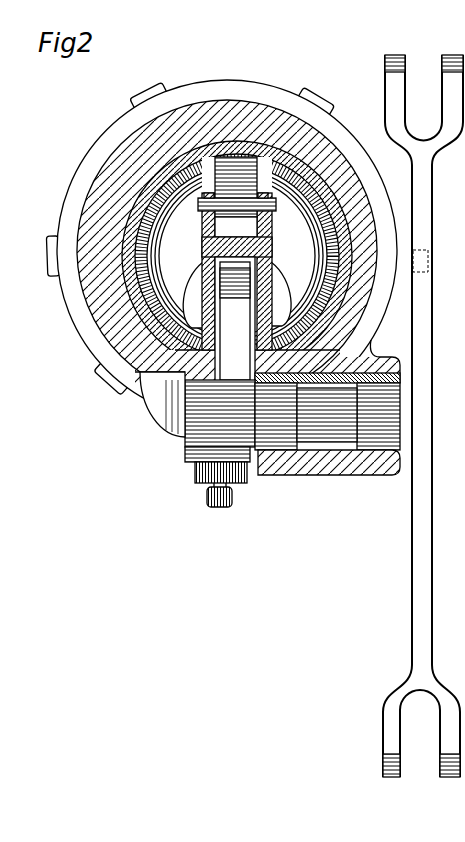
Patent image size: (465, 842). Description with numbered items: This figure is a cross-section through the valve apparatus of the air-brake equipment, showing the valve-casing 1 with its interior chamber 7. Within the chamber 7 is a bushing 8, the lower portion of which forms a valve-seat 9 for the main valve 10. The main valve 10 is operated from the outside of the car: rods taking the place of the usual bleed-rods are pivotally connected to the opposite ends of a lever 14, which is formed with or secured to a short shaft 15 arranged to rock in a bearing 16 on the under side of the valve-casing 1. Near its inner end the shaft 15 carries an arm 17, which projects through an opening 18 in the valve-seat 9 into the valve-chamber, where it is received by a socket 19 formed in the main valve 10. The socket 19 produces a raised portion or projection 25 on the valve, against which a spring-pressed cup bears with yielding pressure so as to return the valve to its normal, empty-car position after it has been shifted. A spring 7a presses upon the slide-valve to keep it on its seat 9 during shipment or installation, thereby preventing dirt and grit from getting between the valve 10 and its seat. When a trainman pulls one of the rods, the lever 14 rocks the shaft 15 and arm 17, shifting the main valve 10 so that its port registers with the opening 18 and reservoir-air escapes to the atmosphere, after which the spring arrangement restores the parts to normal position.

The casing 1 is at (100, 183).
The interior chamber 7 is at (221, 269).
The spring 7a is at (226, 207).
The bushing 8 is at (140, 290).
The valve-seat 9 is at (195, 362).
The main valve 10 is at (195, 318).
The lever 14 is at (464, 216).
The short shaft 15 is at (367, 440).
The bearing 16 is at (299, 470).
The arm 17 is at (256, 305).
The opening 18 is at (177, 368).
The socket 19 is at (266, 255).
The raised portion or projection 25 is at (268, 223).